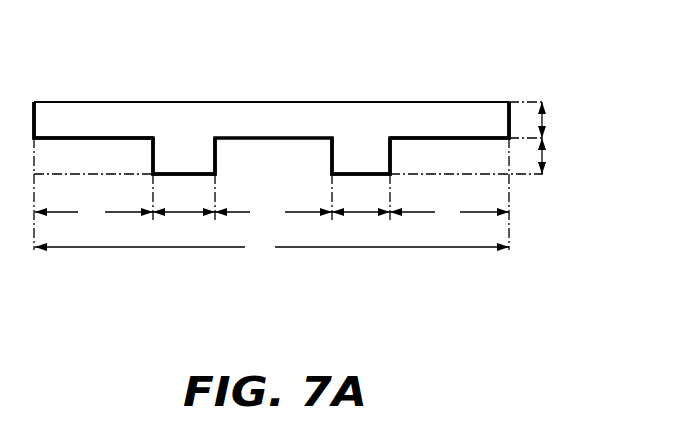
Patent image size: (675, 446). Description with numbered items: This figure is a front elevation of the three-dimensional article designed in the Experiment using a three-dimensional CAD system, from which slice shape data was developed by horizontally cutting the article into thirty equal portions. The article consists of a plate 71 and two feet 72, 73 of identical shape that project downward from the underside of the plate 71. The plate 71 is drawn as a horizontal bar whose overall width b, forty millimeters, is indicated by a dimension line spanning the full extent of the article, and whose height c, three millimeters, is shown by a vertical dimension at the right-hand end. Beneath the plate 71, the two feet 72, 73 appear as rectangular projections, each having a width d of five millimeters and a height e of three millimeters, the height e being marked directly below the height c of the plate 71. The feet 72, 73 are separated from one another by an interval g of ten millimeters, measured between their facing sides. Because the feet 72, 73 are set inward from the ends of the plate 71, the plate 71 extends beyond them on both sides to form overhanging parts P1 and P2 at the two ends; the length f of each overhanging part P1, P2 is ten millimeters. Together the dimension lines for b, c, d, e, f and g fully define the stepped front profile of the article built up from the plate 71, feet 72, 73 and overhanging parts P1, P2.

The plate 71 is at (274, 102).
The foot 72 is at (183, 147).
The foot 73 is at (364, 147).
The overhanging part P1 is at (77, 120).
The overhanging part P2 is at (445, 118).
The width of plate b is at (272, 247).
The height of plate c is at (545, 115).
The width of foot d is at (180, 212).
The height of foot e is at (545, 152).
The length of overhanging part f is at (272, 210).
The interval between the feet g is at (273, 212).